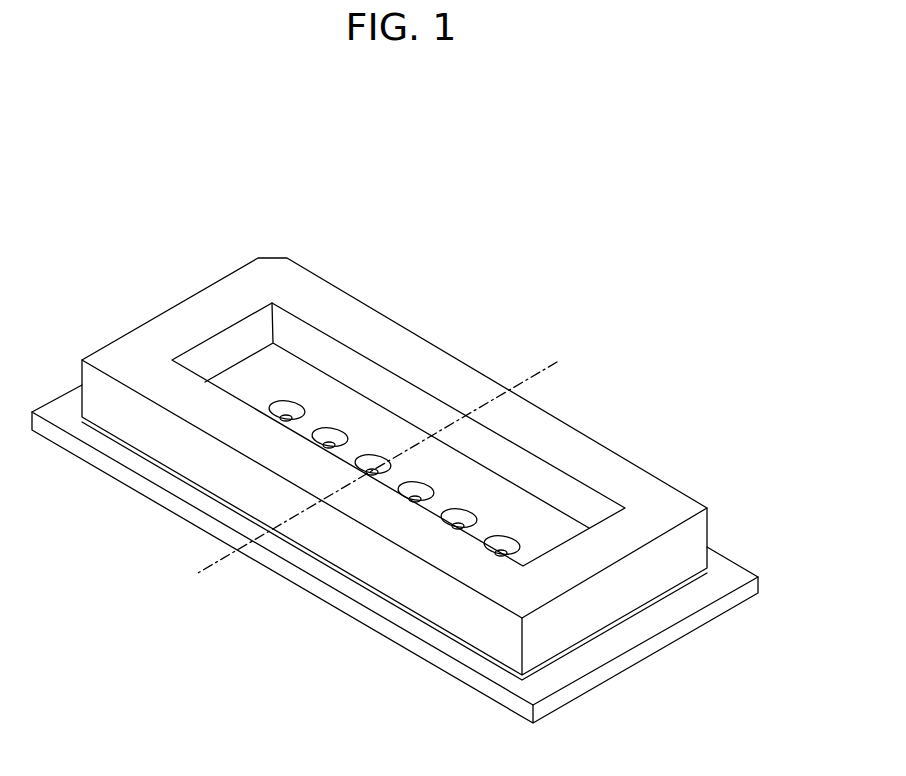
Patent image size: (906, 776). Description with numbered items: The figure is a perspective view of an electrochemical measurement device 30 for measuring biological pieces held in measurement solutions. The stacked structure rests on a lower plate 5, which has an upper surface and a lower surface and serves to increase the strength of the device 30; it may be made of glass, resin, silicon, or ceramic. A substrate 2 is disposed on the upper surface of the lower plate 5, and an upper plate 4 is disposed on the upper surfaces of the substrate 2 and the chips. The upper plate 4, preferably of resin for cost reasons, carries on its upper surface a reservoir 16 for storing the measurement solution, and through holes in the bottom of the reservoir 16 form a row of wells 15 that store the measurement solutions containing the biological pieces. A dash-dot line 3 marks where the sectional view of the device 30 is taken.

The electrochemical measurement device 30 is at (563, 218).
The upper plate 4 is at (573, 448).
The reservoir 16 is at (265, 362).
The well 15 is at (332, 435).
The line 3- 3 is at (381, 470).
The lower plate 5 is at (350, 593).
The substrate 2 is at (647, 600).